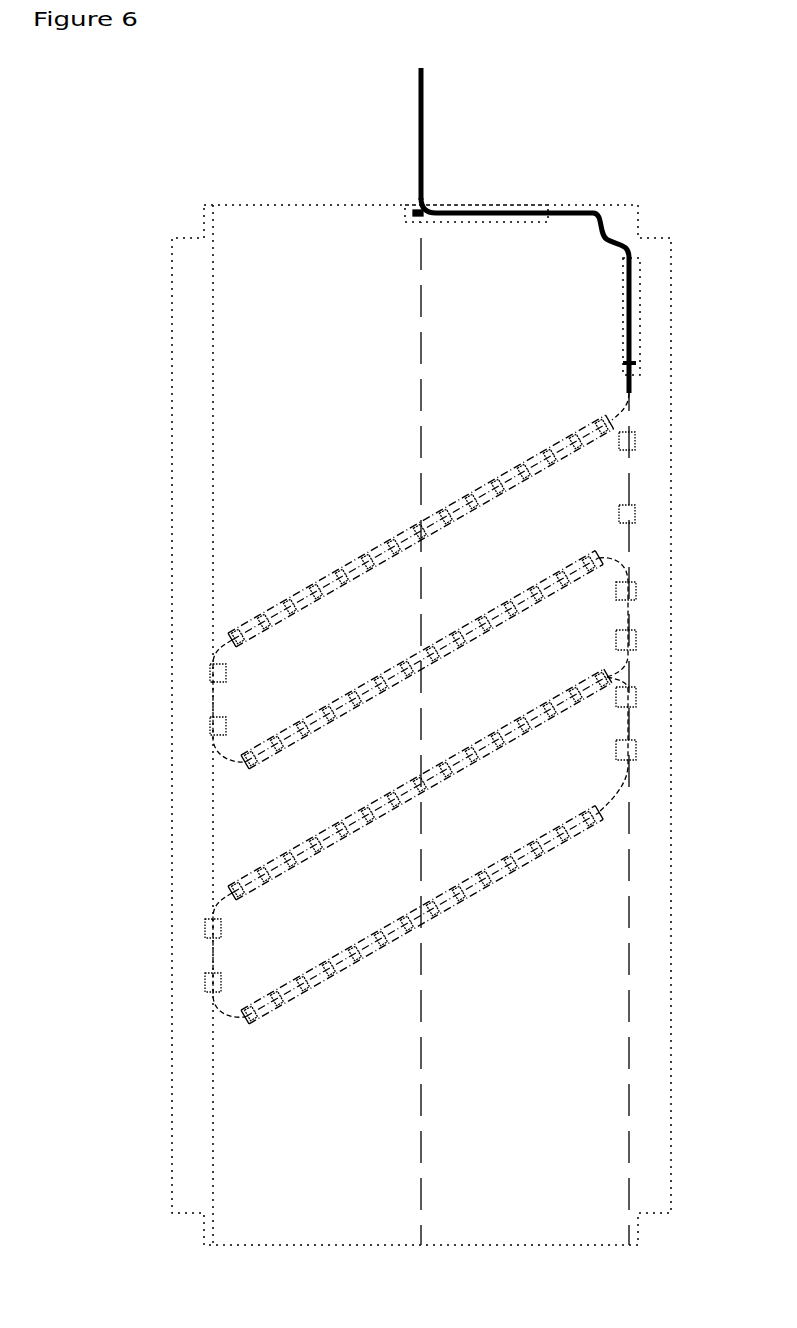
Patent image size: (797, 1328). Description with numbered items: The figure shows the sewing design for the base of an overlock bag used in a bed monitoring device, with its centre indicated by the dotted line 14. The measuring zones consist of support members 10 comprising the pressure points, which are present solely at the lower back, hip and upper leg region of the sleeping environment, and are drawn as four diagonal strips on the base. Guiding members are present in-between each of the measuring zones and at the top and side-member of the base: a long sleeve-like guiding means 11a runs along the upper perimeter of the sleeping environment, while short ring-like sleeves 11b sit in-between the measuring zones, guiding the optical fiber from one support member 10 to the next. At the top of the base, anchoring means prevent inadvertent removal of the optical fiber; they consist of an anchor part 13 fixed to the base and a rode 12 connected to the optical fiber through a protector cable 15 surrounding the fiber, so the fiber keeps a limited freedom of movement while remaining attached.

The support members 10 is at (312, 575).
The long sleeve-like guiding means 11a is at (614, 327).
The short ring-like sleeves 11b is at (637, 440).
The rode 12 is at (428, 187).
The anchor part 13 is at (416, 216).
The dotted line 14 is at (412, 1063).
The protector cable 15 is at (430, 141).